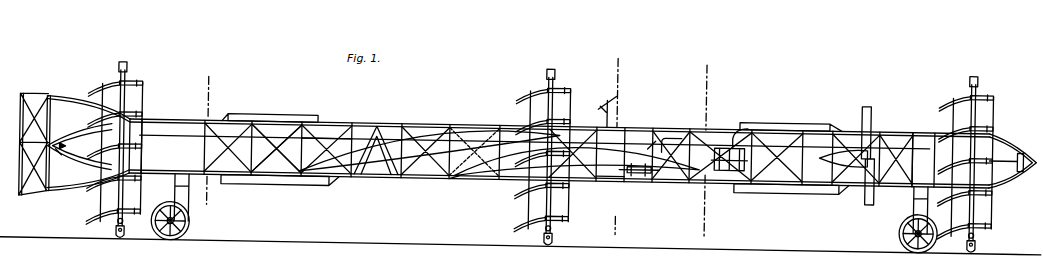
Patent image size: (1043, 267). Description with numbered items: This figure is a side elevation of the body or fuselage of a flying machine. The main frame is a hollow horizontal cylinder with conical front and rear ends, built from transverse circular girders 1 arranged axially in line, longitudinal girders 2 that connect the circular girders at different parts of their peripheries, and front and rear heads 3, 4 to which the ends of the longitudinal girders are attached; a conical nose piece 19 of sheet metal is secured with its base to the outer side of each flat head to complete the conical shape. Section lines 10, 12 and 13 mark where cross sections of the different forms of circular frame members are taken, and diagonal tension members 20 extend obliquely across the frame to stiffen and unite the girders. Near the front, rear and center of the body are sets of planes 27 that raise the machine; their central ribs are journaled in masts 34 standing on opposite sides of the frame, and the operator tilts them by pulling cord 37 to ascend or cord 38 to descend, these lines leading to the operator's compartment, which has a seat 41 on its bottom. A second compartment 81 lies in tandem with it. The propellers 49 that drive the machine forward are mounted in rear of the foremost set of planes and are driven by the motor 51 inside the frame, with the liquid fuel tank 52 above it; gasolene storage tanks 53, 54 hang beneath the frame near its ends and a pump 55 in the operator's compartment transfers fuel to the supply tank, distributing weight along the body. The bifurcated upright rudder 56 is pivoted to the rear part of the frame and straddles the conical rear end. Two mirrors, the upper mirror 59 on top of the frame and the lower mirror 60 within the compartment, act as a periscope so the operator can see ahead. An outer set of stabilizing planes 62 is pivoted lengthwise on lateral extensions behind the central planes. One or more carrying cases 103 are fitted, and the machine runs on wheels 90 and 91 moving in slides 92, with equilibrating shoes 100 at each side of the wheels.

The transverse circular girders 1 is at (215, 155).
The longitudinal girders 2 is at (422, 122).
The front head 3 is at (1014, 148).
The rear head 4 is at (79, 146).
The section line 10 is at (625, 147).
The section line 12 is at (713, 153).
The section line 13 is at (216, 139).
The conical nose piece 19 is at (58, 153).
The tension members 20 is at (340, 150).
The sets of planes 27 is at (108, 89).
The masts 34 is at (126, 68).
The cord 37 is at (912, 112).
The cord 38 is at (263, 130).
The seat 41 is at (606, 176).
The propellers 49 is at (858, 190).
The motor 51 is at (714, 175).
The liquid fuel tank 52 is at (733, 116).
The gasolene storage tank 53 is at (768, 182).
The gasolene storage tank 54 is at (258, 182).
The pump 55 is at (634, 170).
The upright rudder 56 is at (28, 97).
The upper mirror 59 is at (611, 95).
The lower mirror 60 is at (652, 125).
The outer set of stabilizing planes 62 is at (460, 176).
The second compartment 81 is at (376, 150).
The wheel 90 is at (907, 237).
The wheel 91 is at (182, 239).
The slides 92 is at (192, 214).
The equilibrating shoes 100 is at (124, 240).
The carrying cases 103 is at (266, 113).